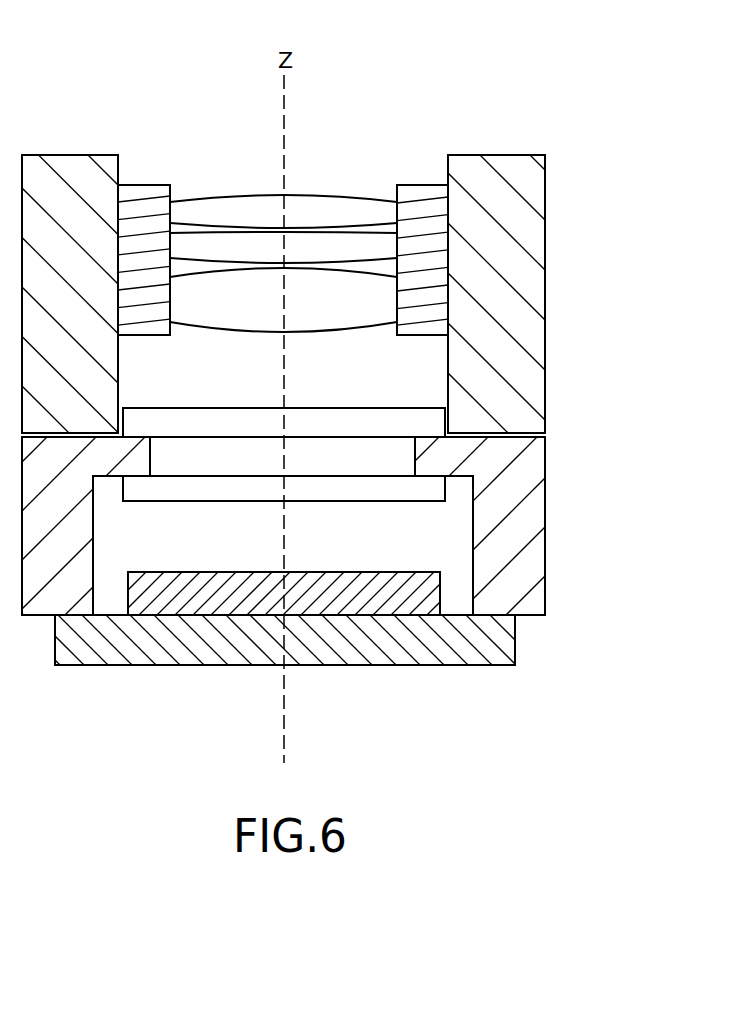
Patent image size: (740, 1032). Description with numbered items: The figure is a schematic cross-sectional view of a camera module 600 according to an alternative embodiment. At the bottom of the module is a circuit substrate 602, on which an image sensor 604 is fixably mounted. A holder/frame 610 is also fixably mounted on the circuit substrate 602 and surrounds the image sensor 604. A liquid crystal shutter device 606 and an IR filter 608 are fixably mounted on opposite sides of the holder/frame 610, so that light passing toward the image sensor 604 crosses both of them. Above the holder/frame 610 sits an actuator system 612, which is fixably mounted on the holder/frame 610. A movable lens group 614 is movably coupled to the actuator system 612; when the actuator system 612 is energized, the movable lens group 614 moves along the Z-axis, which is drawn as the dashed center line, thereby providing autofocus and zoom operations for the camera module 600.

The camera module 600 is at (80, 100).
The circuit substrate 602 is at (470, 634).
The image sensor 604 is at (182, 594).
The liquid crystal shutter device 606 is at (225, 490).
The IR filter 608 is at (405, 417).
The holder/frame 610 is at (520, 478).
The actuator system 612 is at (503, 256).
The movable lens group 614 is at (222, 246).